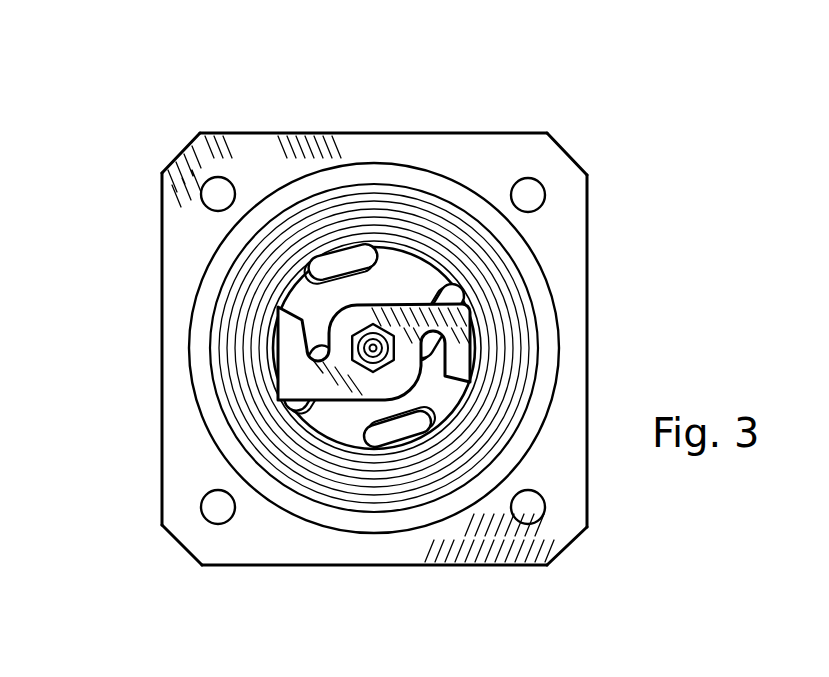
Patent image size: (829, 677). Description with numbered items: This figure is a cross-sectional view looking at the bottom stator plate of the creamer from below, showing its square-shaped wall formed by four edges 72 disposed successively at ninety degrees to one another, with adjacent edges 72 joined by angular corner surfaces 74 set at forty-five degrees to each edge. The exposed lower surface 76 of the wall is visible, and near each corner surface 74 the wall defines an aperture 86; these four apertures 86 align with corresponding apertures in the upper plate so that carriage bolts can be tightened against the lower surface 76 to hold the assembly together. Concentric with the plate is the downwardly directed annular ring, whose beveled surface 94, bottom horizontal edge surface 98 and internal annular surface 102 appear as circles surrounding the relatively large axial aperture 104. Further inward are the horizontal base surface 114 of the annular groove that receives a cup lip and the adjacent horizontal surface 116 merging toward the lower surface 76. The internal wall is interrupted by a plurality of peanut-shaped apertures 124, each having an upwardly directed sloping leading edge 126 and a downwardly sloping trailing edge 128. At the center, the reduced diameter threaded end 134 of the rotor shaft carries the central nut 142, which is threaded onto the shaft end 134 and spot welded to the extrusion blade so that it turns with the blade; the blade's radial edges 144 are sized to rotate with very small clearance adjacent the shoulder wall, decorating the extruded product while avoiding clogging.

The edge 72 is at (294, 133).
The angular corner surface 74 is at (178, 150).
The exposed lower surface 76 is at (270, 165).
The aperture 86 is at (203, 195).
The beveled surface 94 is at (218, 337).
The bottom horizontal edge surface 98 is at (428, 195).
The internal annular surface 102 is at (447, 228).
The aperture 104 is at (462, 252).
The horizontal base surface 114 is at (386, 230).
The horizontal surface 116 is at (372, 250).
The peanut-shaped aperture 124 is at (348, 255).
The leading edge 126 is at (322, 272).
The trailing edge 128 is at (352, 266).
The threaded end 134 is at (366, 368).
The nut 142 is at (396, 370).
The radial edge 144 is at (470, 350).